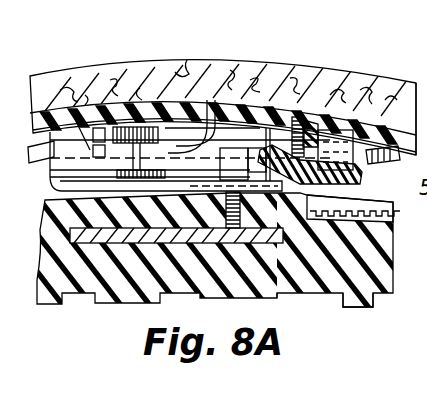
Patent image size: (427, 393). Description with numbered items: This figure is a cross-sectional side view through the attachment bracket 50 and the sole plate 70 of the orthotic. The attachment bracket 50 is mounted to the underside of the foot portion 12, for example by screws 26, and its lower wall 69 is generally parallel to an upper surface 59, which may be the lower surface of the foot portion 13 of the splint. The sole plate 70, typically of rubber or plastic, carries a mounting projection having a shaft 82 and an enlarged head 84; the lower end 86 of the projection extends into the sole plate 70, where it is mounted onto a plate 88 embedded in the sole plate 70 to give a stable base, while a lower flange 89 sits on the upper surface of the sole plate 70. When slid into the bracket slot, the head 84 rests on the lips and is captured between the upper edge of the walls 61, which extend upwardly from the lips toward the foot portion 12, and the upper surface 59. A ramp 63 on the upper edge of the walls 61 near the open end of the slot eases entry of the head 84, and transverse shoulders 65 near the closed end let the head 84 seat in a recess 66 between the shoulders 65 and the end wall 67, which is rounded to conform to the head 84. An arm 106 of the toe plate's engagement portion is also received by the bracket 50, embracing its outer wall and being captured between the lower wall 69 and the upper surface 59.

The foot portion 12 is at (398, 78).
The foot portion of splint 13 is at (347, 115).
The screws 26 is at (98, 100).
The attachment bracket 50 is at (50, 181).
The upper surface 59 is at (232, 126).
The walls 61 is at (137, 127).
The ramp 63 is at (72, 113).
The transverse shoulders 65 is at (182, 100).
The recess 66 is at (209, 128).
The end wall 67 is at (300, 117).
The lower wall 69 is at (55, 200).
The sole plate 70 is at (341, 297).
The shaft 82 is at (157, 127).
The enlarged head 84 is at (250, 128).
The lower end 86 is at (232, 243).
The plate 88 is at (112, 243).
The lower flange 89 is at (290, 245).
The arm 106 is at (358, 157).